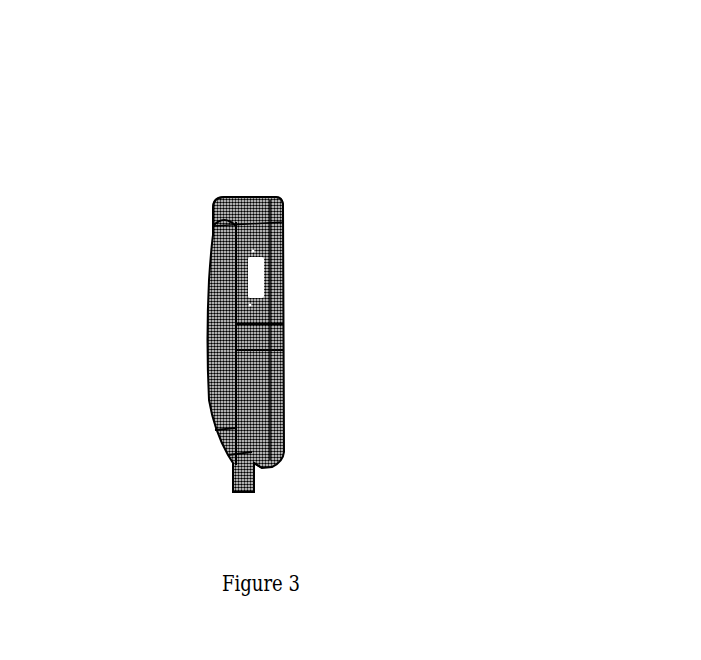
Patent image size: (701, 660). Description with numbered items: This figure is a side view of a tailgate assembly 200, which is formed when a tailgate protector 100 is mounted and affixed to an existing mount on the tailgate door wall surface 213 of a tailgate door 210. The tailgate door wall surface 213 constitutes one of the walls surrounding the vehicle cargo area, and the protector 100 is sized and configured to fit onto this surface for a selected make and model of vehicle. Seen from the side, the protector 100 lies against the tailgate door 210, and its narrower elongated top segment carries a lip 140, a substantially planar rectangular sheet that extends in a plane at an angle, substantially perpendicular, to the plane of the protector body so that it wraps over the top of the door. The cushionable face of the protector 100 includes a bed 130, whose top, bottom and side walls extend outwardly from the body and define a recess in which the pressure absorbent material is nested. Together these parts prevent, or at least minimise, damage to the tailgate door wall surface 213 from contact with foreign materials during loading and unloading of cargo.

The tailgate assembly 200 is at (264, 124).
The tailgate door 210 is at (225, 372).
The lip 140 is at (231, 188).
The tailgate door wall surface 213 is at (283, 212).
The tailgate protector 100 is at (295, 257).
The bed 130 is at (250, 324).